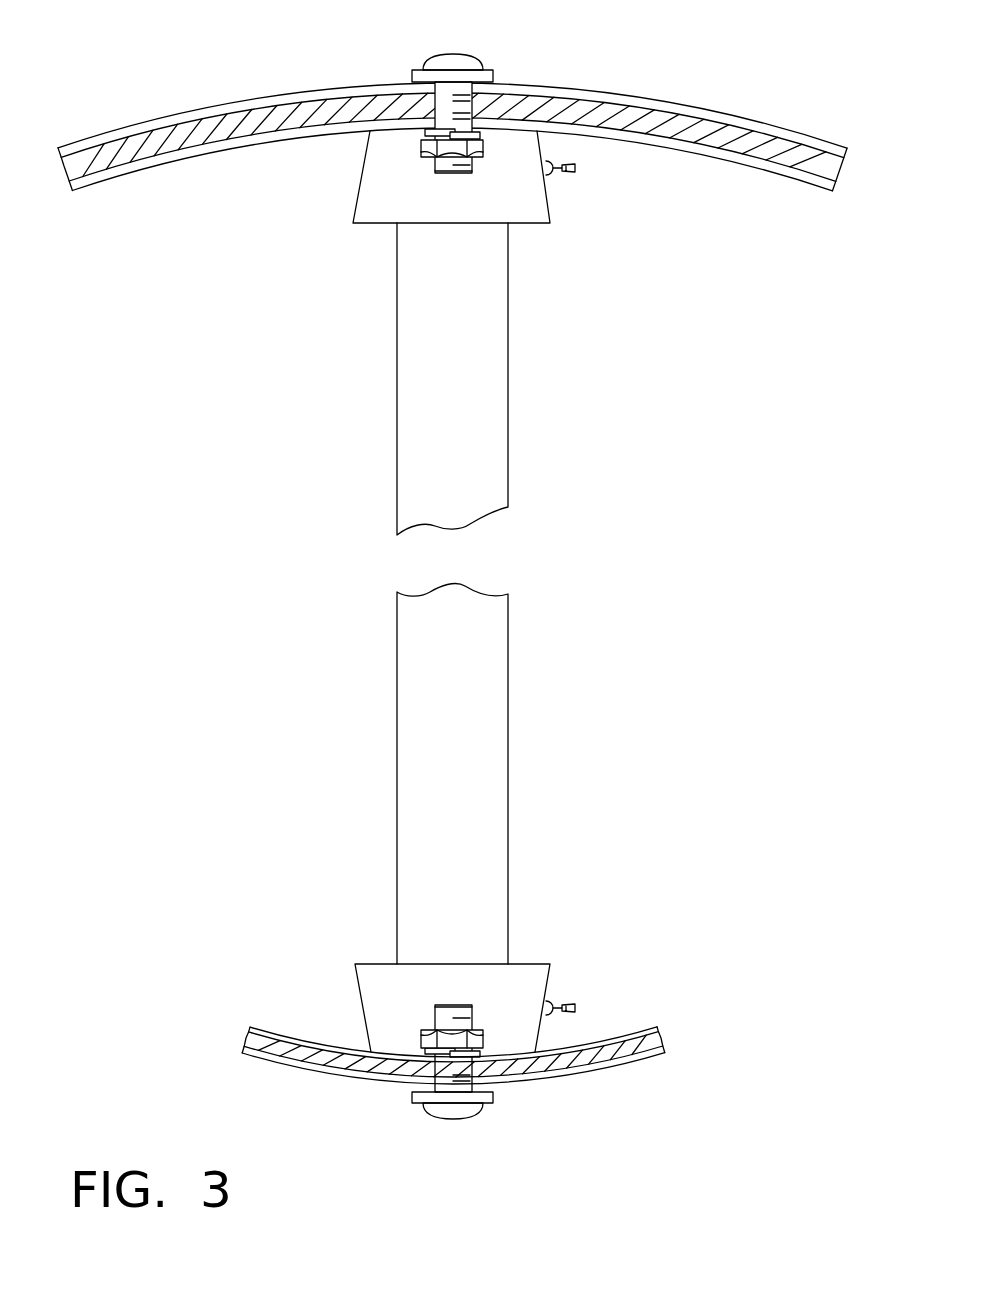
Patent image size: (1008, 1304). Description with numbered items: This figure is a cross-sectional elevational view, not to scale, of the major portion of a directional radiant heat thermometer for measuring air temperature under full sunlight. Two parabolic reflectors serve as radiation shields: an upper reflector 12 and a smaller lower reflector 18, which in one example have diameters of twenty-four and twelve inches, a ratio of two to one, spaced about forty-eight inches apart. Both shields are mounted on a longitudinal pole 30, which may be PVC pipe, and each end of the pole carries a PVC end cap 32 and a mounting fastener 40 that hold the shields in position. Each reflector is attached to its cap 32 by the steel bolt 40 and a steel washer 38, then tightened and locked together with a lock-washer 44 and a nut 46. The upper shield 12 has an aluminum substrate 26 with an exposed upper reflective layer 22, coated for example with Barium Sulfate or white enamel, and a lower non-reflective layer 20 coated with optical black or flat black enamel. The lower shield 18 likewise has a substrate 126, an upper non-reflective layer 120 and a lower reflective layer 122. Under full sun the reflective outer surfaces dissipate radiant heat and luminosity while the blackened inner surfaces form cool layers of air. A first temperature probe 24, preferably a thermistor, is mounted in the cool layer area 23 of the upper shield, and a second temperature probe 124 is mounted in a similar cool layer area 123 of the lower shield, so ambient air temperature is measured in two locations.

The upper reflector 12 is at (722, 63).
The lower reflector 18 is at (208, 1040).
The lower non-reflective layer 20 is at (733, 163).
The upper reflective layer 22 is at (692, 107).
The cool layer area 23 is at (133, 212).
The first temperature probe 24 is at (568, 172).
The substrate 26 is at (768, 147).
The pole 30 is at (467, 293).
The end cap 32 is at (464, 215).
The steel washer 38 is at (412, 76).
The mounting fastener 40 is at (432, 57).
The lock-washer 44 is at (426, 133).
The nut 46 is at (430, 156).
The upper non-reflective layer 120 is at (280, 1030).
The lower reflective layer 122 is at (273, 1062).
The cool layer area 123 is at (318, 1002).
The second temperature probe 124 is at (580, 1013).
The substrate 126 is at (628, 1052).